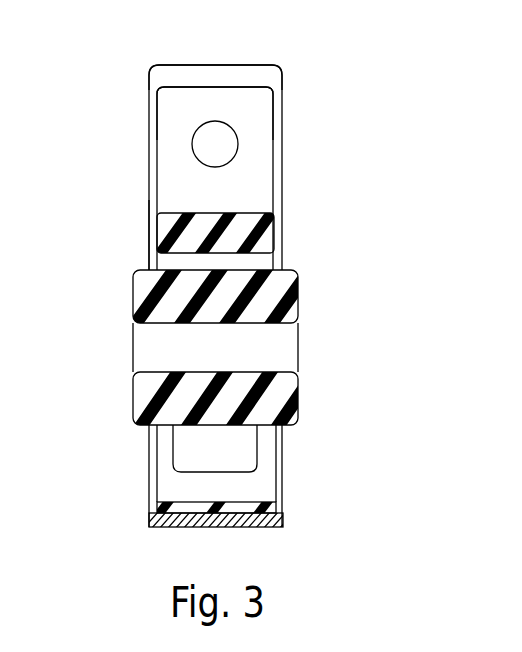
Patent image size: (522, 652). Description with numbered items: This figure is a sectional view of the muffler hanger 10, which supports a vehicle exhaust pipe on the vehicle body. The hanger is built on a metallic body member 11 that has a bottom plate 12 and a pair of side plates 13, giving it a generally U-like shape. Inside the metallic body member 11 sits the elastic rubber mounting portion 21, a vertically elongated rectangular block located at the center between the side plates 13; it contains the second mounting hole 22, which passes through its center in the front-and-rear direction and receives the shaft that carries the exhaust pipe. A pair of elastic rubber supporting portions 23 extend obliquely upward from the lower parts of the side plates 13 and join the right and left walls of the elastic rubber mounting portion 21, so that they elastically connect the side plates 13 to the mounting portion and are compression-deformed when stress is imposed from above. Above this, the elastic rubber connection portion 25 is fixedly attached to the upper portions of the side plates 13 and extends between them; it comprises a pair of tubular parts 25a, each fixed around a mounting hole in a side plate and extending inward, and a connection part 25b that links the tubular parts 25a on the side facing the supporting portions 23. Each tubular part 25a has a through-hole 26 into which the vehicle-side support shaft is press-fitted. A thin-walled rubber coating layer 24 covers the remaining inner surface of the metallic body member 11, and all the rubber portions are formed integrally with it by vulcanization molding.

The muffler hanger 10 is at (292, 84).
The metallic body member 11 is at (280, 62).
The bottom plate 12 is at (239, 528).
The side plate 13 is at (146, 238).
The elastic rubber mounting portion 21 is at (288, 312).
The second mounting hole 22 is at (278, 371).
The elastic rubber supporting portion 23 is at (258, 452).
The rubber coating layer 24 is at (262, 491).
The elastic rubber connection portion 25 is at (285, 181).
The tubular part 25a is at (258, 150).
The connection part 25b is at (276, 257).
The through-hole 26 is at (193, 150).